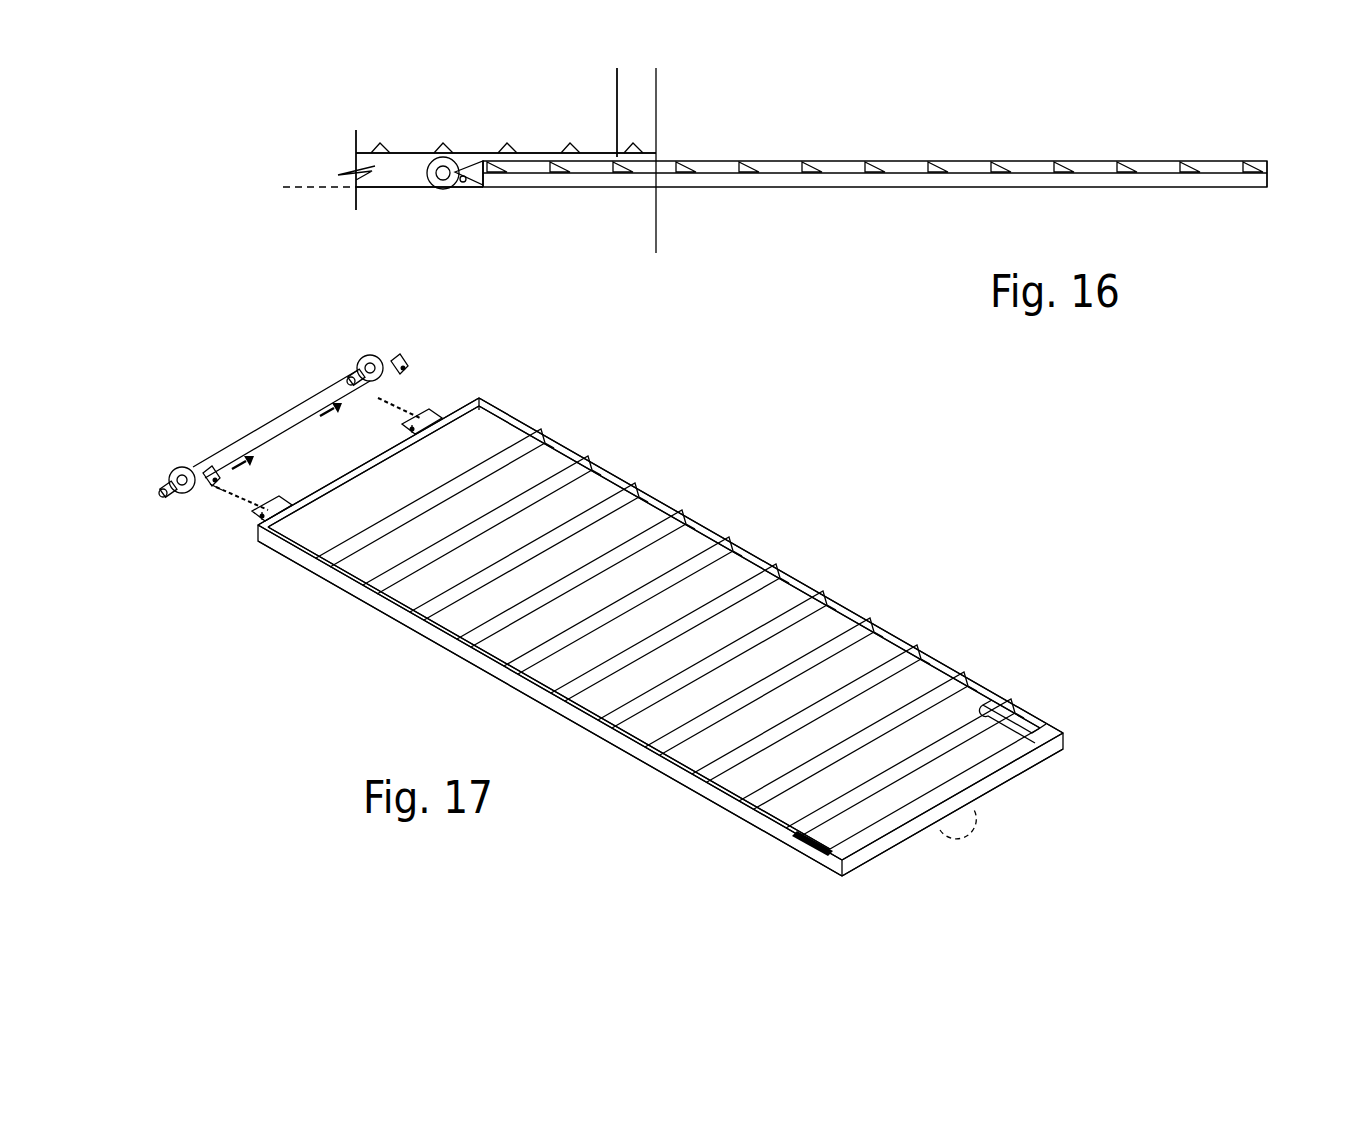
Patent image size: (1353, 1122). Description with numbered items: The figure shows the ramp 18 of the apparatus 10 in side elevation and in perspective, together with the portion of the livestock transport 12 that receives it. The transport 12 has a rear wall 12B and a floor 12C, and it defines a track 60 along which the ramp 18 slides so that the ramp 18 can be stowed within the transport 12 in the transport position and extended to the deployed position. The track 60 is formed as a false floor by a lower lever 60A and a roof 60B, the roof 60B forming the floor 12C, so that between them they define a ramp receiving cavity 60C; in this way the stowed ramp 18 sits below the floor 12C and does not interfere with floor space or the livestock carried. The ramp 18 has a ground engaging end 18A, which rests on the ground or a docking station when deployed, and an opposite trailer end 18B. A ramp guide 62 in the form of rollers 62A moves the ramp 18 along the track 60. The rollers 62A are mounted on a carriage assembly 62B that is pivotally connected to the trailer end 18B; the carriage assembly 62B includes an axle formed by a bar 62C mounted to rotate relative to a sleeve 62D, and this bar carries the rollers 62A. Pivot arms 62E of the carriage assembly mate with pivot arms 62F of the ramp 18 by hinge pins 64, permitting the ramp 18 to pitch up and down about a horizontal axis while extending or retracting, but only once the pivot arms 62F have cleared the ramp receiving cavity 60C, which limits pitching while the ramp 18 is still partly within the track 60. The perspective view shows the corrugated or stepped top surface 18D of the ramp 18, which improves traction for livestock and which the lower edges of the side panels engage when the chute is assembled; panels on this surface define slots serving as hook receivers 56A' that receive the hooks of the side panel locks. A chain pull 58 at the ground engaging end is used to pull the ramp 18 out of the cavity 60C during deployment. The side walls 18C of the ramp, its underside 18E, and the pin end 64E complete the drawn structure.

In FIG. 16, the apparatus 10 is at (1150, 68).
In FIG. 16, the livestock transport 12 is at (657, 90).
In FIG. 16, the rear wall 12B is at (643, 118).
In FIG. 16, the floor 12C is at (478, 160).
In FIG. 16, the ramp 18 is at (1085, 160).
In FIG. 17, the ramp 18 is at (648, 613).
In FIG. 16, the ground engaging end 18A is at (1270, 173).
In FIG. 17, the ground engaging end 18A is at (1054, 775).
In FIG. 17, the trailer end 18B is at (256, 366).
In FIG. 17, the tray side wall 18C is at (725, 517).
In FIG. 17, the top surface 18D is at (755, 610).
In FIG. 17, the tray bottom 18E is at (754, 841).
In FIG. 17, the first slot 56A' is at (795, 887).
In FIG. 17, the chain pull 58 is at (967, 832).
In FIG. 16, the track 60 is at (337, 143).
In FIG. 16, the lower lever 60A is at (398, 190).
In FIG. 16, the roof 60B is at (405, 152).
In FIG. 16, the ramp receiving cavity 60C is at (397, 161).
In FIG. 17, the ramp guide 62 is at (327, 419).
In FIG. 16, the rollers 62A is at (447, 158).
In FIG. 17, the rollers 62A is at (385, 373).
In FIG. 16, the carriage assembly 62B is at (443, 193).
In FIG. 17, the carriage assembly 62B is at (177, 465).
In FIG. 17, the bar 62C is at (387, 360).
In FIG. 17, the sleeve 62D is at (313, 398).
In FIG. 17, the pivot arms 62E is at (381, 387).
In FIG. 17, the pivot arms 62F is at (437, 418).
In FIG. 17, the hinge pins 64 is at (262, 457).
In FIG. 17, the pin end 64E is at (230, 483).